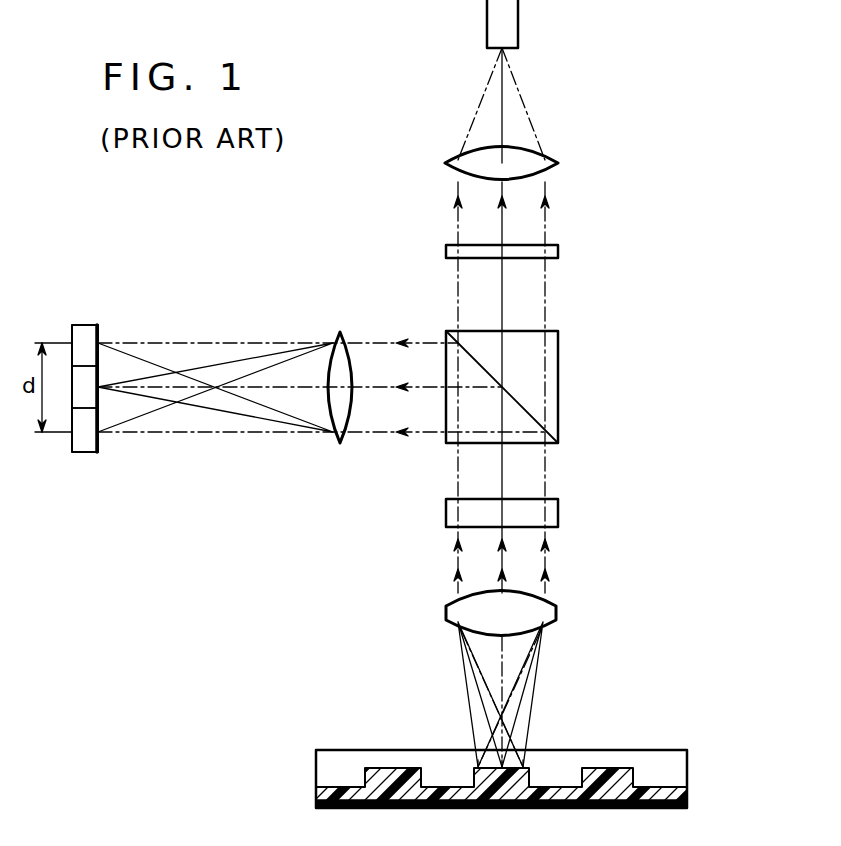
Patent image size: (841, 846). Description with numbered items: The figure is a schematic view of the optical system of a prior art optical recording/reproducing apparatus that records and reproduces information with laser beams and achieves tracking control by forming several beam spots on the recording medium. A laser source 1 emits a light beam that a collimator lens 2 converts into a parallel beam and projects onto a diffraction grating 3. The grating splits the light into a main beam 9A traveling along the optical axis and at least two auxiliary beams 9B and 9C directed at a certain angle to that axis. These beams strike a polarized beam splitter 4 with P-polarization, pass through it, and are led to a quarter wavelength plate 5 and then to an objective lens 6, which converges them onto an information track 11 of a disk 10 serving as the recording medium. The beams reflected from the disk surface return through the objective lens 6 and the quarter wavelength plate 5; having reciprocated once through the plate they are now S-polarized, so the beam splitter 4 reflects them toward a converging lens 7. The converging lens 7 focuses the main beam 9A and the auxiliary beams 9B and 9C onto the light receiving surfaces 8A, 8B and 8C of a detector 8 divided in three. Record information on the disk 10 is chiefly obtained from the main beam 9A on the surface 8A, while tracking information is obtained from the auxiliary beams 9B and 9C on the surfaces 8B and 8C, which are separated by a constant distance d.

The laser source 1 is at (519, 22).
The collimator lens 2 is at (560, 165).
The diffraction grating 3 is at (560, 249).
The polarized beam splitter 4 is at (560, 385).
The quarter wavelength plate 5 is at (560, 513).
The objective lens 6 is at (558, 605).
The converging lens 7 is at (340, 447).
The detector 8 is at (87, 391).
The light receiving surface 8A is at (74, 410).
The light receiving surface 8B is at (100, 454).
The light receiving surface 8C is at (86, 324).
The main beam 9A is at (502, 770).
The auxiliary beam 9B is at (530, 724).
The auxiliary beam 9C is at (486, 722).
The disk 10 is at (651, 748).
The information track 11 is at (682, 778).